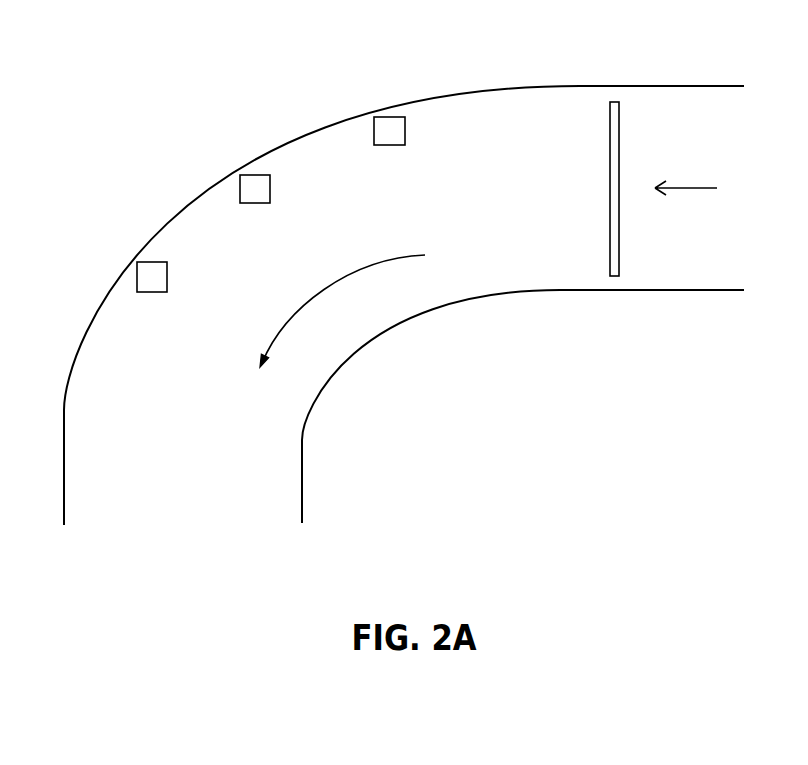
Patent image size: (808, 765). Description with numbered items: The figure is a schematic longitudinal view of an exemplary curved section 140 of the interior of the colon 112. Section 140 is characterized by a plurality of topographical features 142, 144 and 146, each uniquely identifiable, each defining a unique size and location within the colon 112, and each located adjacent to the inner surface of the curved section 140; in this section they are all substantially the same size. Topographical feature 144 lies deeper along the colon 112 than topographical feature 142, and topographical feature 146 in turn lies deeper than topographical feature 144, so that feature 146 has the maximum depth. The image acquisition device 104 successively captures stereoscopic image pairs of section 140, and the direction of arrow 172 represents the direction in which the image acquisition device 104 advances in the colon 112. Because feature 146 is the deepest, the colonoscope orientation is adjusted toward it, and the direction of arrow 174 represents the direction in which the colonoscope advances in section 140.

The colon 112 is at (540, 87).
The curved section 140 is at (502, 278).
The image acquisition device 104 is at (619, 127).
The arrow 172 is at (683, 190).
The arrow 174 is at (373, 262).
The topographical feature 142 is at (390, 145).
The topographical feature 144 is at (253, 203).
The topographical feature 146 is at (147, 292).